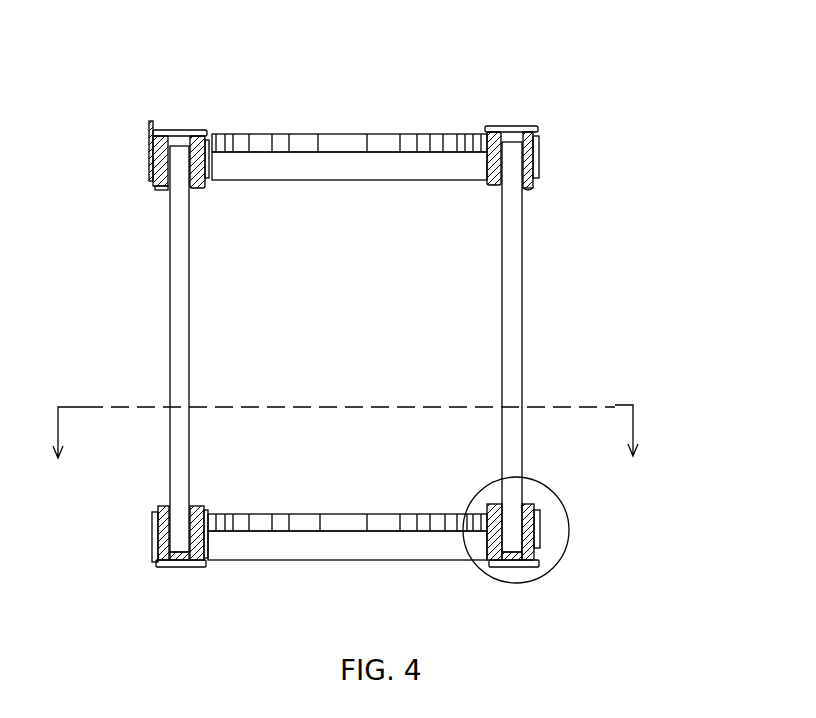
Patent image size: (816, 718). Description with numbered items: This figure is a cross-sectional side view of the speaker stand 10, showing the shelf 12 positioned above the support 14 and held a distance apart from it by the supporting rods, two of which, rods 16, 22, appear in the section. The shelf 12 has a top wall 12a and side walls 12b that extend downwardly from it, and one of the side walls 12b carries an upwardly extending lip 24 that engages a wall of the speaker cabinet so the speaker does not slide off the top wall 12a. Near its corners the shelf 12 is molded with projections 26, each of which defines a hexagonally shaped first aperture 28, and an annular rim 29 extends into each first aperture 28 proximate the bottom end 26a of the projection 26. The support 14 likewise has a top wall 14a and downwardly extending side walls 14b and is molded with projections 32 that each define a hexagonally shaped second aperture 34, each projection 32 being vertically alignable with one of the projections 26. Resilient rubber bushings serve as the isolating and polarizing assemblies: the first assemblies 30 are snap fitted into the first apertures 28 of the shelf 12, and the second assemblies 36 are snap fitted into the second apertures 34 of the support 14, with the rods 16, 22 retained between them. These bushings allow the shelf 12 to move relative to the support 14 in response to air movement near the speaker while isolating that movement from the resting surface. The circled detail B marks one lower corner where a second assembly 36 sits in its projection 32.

The speaker stand 10 is at (637, 282).
The shelf 12 is at (392, 134).
The top wall 12a is at (336, 134).
The side walls 12b is at (342, 180).
The support 14 is at (393, 513).
The top wall 14a is at (300, 513).
The side walls 14b is at (397, 546).
The supporting rod 16 is at (183, 352).
The supporting rod 22 is at (514, 340).
The lip 24 is at (152, 126).
The projections 26 is at (152, 157).
The bottom end 26a is at (540, 178).
The first apertures 28 is at (192, 192).
The annular rim 29 is at (535, 188).
The first assemblies 30 is at (233, 132).
The projections 32 is at (153, 540).
The second apertures 34 is at (201, 509).
The second assemblies 36 is at (156, 563).
The detail circle B is at (552, 487).